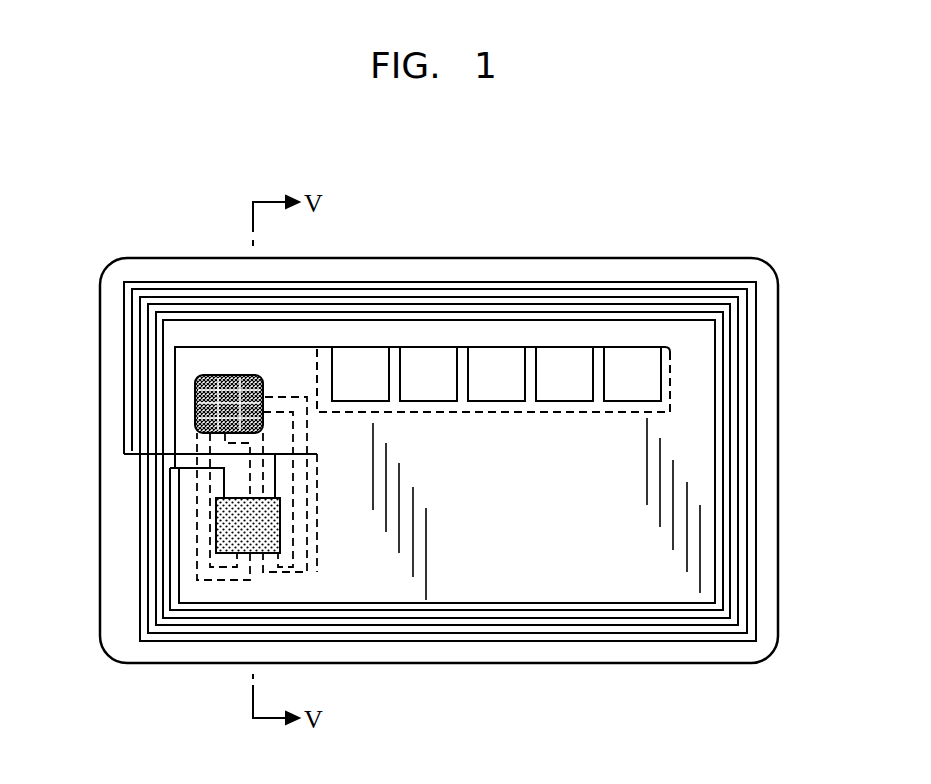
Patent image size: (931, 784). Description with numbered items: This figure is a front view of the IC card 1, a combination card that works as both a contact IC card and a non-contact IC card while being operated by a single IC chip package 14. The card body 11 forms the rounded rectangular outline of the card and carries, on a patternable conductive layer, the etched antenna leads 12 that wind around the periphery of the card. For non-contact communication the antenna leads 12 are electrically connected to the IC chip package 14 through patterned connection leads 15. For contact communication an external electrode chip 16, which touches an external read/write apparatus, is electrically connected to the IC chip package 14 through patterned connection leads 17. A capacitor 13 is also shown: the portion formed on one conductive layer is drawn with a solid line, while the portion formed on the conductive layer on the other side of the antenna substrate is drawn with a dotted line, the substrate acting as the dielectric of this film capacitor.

The IC card 1 is at (464, 402).
The card body 11 is at (748, 224).
The antenna leads 12 is at (573, 286).
The capacitor 13 is at (510, 405).
The IC chip package 14 is at (240, 532).
The patterned connection leads 15 is at (223, 482).
The external electrode chip 16 is at (195, 412).
The patterned connection leads 17 is at (307, 572).